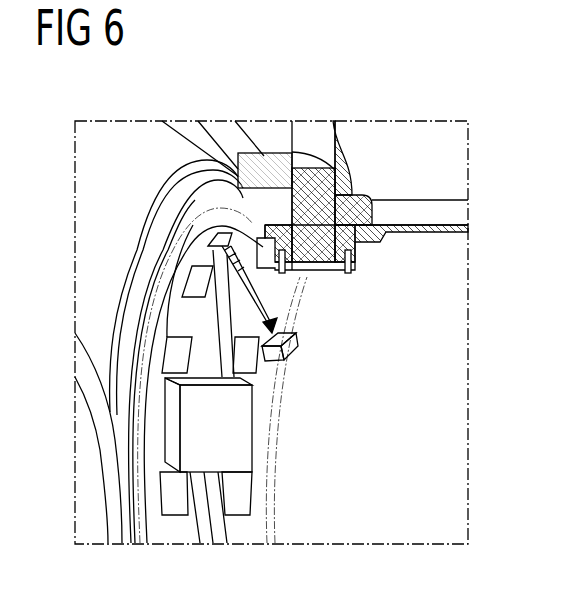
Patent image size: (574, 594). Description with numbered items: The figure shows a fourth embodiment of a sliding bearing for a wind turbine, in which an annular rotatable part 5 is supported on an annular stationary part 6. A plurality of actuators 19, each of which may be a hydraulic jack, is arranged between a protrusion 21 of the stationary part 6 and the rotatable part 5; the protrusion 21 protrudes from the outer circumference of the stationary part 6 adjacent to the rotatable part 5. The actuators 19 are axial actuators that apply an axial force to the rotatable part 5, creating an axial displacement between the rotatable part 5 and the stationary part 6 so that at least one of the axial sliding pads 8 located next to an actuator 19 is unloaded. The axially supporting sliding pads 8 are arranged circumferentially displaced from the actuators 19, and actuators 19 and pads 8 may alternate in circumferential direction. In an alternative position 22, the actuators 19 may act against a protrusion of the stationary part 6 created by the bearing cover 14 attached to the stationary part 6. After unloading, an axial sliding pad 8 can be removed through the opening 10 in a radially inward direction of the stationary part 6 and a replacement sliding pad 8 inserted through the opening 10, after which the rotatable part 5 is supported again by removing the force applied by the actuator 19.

The alternative position 22 is at (286, 207).
The rotatable part 5 is at (316, 189).
The actuators 19 is at (360, 195).
The protrusion 21 is at (372, 209).
The stationary part 6 is at (417, 234).
The bearing cover 14 is at (243, 196).
The opening 10 is at (210, 238).
The axial sliding pads 8 is at (286, 357).